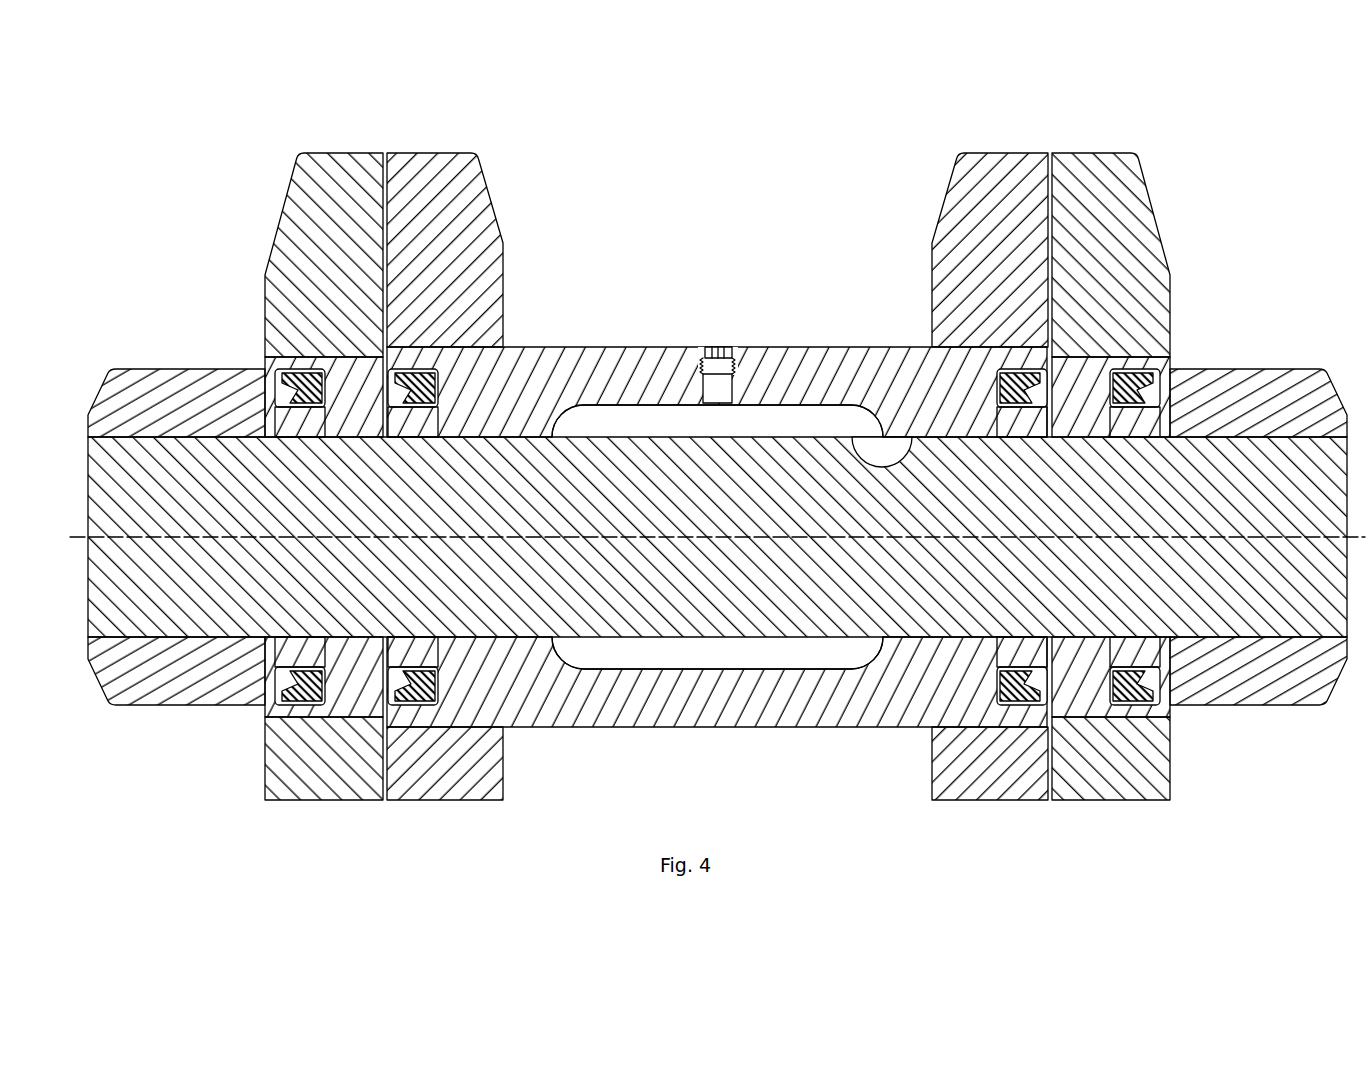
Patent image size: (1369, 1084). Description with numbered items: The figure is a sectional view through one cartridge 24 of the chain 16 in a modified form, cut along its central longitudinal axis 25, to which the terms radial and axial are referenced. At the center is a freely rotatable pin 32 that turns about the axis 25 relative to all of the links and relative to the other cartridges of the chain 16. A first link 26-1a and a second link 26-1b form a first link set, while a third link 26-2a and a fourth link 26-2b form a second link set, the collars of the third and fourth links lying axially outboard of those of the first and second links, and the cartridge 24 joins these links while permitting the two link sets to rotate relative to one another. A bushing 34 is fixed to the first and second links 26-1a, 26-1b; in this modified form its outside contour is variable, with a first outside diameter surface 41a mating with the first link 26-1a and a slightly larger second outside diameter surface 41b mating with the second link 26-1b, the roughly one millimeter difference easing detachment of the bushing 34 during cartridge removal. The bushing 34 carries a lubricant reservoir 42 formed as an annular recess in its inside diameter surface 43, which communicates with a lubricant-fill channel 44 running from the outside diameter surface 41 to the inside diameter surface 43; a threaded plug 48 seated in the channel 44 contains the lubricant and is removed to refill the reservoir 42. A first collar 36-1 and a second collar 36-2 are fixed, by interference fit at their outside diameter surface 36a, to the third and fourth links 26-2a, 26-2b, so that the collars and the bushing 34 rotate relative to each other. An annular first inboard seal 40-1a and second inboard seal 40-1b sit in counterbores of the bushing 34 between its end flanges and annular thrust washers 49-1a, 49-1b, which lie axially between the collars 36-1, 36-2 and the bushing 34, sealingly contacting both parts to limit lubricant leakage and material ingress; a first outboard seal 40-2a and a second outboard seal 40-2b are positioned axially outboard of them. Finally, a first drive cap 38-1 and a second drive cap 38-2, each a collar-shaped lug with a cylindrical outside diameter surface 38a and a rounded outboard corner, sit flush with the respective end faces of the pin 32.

The chain 16 is at (193, 210).
The cartridge 24 is at (1243, 208).
The central longitudinal axis 25 is at (73, 540).
The first link 26-1a is at (480, 178).
The second link 26-1b is at (962, 188).
The third link 26-2a is at (300, 177).
The fourth link 26-2b is at (1127, 182).
The pin 32 is at (150, 612).
The bushing 34 is at (715, 727).
The first collar 36-1 is at (350, 375).
The second collar 36-2 is at (1080, 377).
The outside diameter surface 36a is at (300, 369).
The first drive cap 38-1 is at (128, 393).
The second drive cap 38-2 is at (1290, 400).
The cylindrical outside diameter surface 38a is at (170, 369).
The first inboard seal 40-1a is at (430, 707).
The second inboard seal 40-1b is at (993, 705).
The first outboard seal 40-2a is at (323, 707).
The second outboard seal 40-2b is at (1127, 707).
The outside diameter surface 41 is at (845, 347).
The first outside diameter surface 41a is at (610, 347).
The second outside diameter surface 41b is at (957, 345).
The lubricant reservoir 42 is at (602, 405).
The inside diameter surface 43 is at (873, 463).
The lubricant-fill channel 44 is at (727, 390).
The plug 48 is at (715, 347).
The annular thrust washer 49-1a is at (433, 652).
The annular thrust washer 49-1b is at (987, 648).